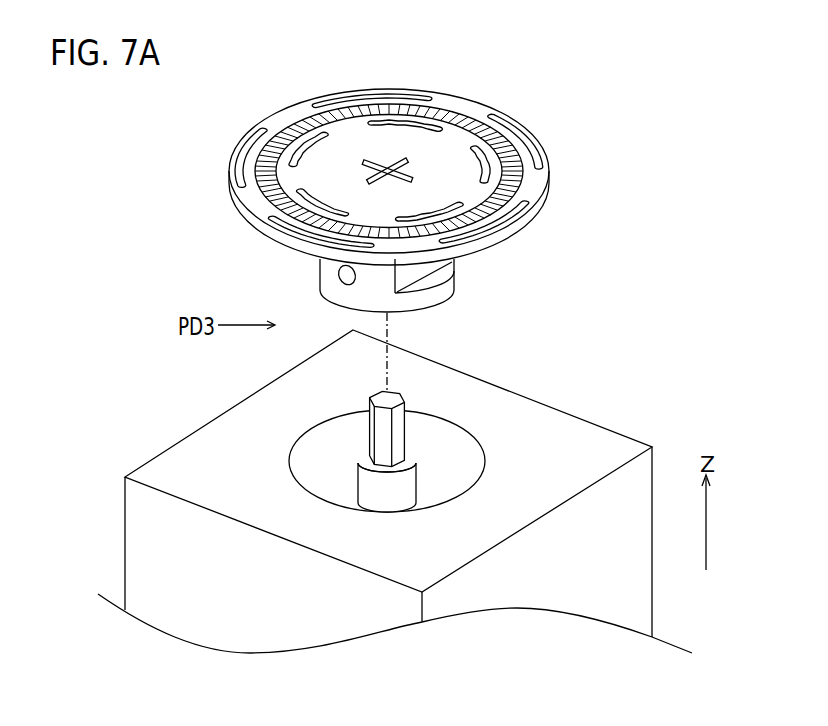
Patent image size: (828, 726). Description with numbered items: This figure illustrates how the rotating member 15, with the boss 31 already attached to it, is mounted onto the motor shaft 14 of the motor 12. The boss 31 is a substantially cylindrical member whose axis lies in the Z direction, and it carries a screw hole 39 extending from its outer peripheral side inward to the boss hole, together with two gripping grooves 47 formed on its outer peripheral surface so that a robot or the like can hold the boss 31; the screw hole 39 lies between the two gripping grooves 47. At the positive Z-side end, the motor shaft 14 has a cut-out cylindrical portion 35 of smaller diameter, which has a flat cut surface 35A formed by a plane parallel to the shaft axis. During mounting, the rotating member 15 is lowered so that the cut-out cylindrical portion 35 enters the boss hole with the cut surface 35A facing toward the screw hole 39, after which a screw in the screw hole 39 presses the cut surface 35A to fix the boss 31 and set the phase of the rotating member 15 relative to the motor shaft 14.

The motor 12 is at (568, 407).
The motor shaft 14 is at (388, 500).
The rotating member 15 is at (465, 113).
The boss 31 is at (387, 302).
The cut-out cylindrical portion 35 is at (348, 421).
The cut surface 35A is at (379, 436).
The screw hole 39 is at (336, 272).
The gripping groove 47 is at (436, 282).